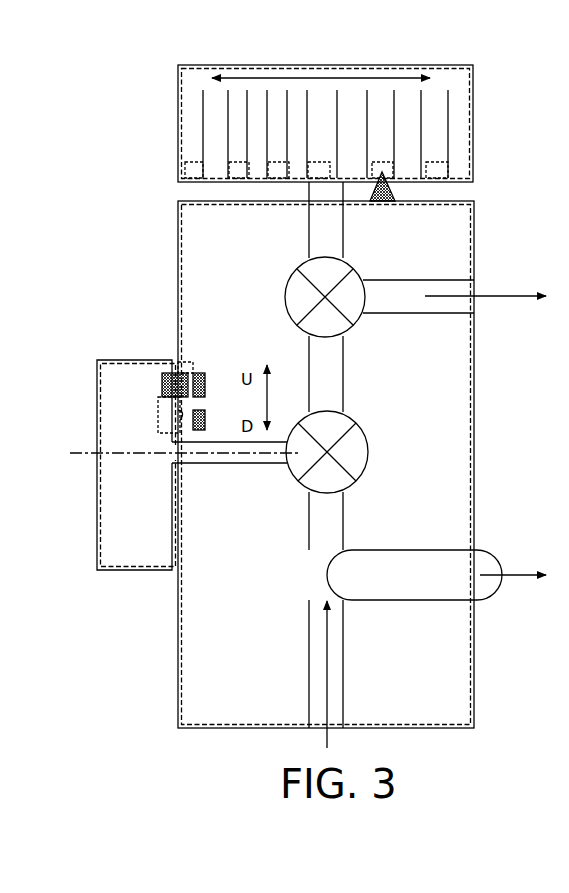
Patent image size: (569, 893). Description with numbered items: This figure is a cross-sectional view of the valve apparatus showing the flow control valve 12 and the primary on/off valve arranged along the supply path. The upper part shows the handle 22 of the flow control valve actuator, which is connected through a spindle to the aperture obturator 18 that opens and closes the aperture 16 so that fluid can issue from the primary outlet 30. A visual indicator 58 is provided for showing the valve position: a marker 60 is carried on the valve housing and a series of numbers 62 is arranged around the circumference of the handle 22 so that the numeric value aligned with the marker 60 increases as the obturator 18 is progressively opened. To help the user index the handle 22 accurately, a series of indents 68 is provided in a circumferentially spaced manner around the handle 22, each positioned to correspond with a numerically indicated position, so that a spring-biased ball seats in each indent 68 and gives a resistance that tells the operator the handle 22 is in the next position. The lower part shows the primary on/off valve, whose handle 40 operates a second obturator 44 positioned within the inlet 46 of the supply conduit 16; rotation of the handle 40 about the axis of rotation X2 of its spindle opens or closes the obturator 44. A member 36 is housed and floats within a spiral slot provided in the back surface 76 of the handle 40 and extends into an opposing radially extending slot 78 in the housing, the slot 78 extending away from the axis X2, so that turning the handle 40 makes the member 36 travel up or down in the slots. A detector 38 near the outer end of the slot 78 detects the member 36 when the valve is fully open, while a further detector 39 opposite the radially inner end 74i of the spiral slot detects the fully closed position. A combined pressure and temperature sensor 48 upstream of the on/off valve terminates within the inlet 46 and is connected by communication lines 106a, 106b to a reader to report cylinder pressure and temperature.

The flow control valve 12 is at (174, 220).
The aperture 16 is at (345, 358).
The aperture obturator 18 is at (296, 270).
The handle 22 is at (264, 76).
The primary outlet 30 is at (446, 314).
The member 36 is at (168, 378).
The detector 38 is at (206, 385).
The further detector 39 is at (210, 432).
The handle 40 is at (128, 562).
The second obturator 44 is at (370, 452).
The inlet 46 is at (345, 668).
The combined pressure and temperature sensor 48 is at (408, 550).
The visual indicator 58 is at (455, 152).
The marker 60 is at (393, 192).
The numbers 62 is at (380, 130).
The indent 68 is at (188, 162).
The radially inner end of spiral slot 74i is at (160, 402).
The back surface 76 is at (178, 420).
The radially extending slot 78 is at (190, 363).
The communication line 106a is at (515, 582).
The communication line 106b is at (520, 638).
The axis of rotation X2 is at (250, 455).